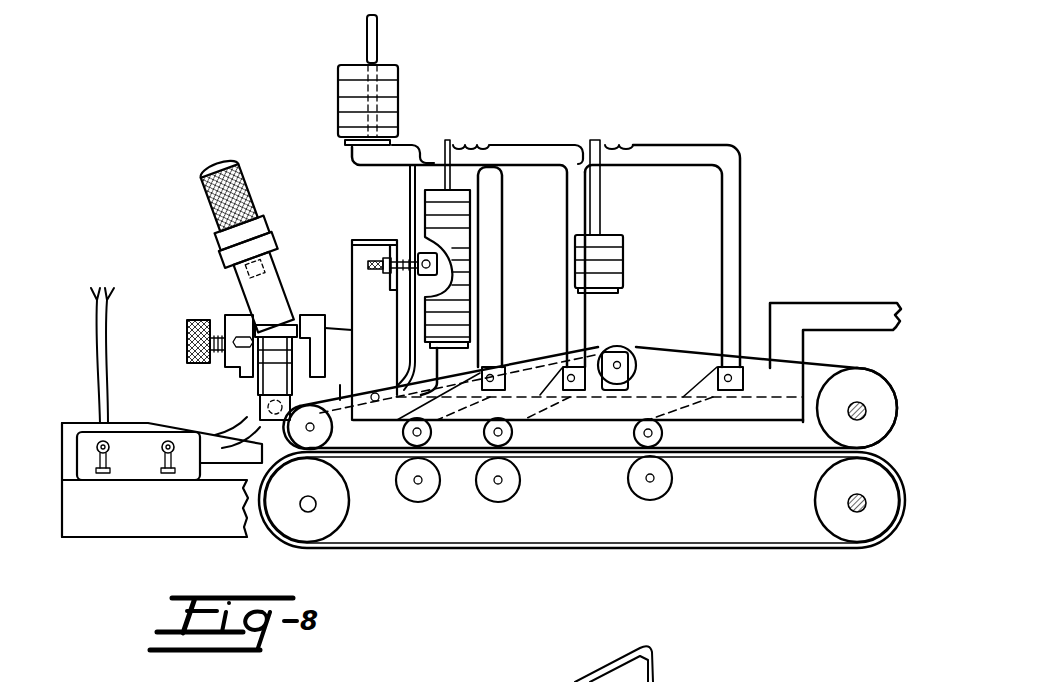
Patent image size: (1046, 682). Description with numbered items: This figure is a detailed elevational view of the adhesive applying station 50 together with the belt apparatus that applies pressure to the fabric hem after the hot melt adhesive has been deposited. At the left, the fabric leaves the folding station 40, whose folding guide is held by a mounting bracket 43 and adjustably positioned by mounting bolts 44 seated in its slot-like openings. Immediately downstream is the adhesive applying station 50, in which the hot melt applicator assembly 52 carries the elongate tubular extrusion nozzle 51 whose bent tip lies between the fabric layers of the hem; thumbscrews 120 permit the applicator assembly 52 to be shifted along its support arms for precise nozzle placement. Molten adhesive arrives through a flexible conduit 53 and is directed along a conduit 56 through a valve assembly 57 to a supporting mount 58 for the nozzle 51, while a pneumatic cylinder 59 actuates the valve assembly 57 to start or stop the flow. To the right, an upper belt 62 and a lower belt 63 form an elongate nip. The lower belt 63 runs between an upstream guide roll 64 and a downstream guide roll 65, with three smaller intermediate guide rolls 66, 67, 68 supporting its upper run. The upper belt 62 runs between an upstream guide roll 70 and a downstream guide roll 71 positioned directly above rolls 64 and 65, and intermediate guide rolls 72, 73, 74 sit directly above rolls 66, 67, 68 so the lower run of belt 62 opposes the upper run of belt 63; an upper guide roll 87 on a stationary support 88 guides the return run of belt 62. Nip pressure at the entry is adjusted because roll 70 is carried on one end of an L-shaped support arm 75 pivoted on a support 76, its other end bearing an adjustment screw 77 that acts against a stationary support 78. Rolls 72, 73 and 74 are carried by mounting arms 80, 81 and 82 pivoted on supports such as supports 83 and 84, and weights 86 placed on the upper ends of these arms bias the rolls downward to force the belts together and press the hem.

The folding station 40 is at (167, 381).
The mounting bracket 43 is at (152, 467).
The mounting bolts 44 is at (170, 466).
The adhesive applying station 50 is at (230, 296).
The extrusion nozzle 51 is at (245, 434).
The hot melt applicator assembly 52 is at (297, 320).
The flexible conduit 53 is at (214, 172).
The conduit 56 is at (267, 272).
The valve assembly 57 is at (277, 389).
The supporting mount 58 is at (247, 417).
The pneumatic cylinder 59 is at (287, 346).
The upper belt 62 is at (697, 347).
The lower belt 63 is at (583, 549).
The upstream guide roll 64 is at (328, 492).
The downstream guide roll 65 is at (872, 490).
The intermediate guide roll 66 is at (418, 500).
The intermediate guide roll 67 is at (498, 500).
The intermediate guide roll 68 is at (650, 498).
The upstream guide roll 70 is at (332, 433).
The downstream guide roll 71 is at (872, 398).
The intermediate guide roll 72 is at (429, 436).
The intermediate guide roll 73 is at (511, 436).
The intermediate guide roll 74 is at (661, 437).
The L-shaped support arm 75 is at (339, 393).
The support 76 is at (374, 393).
The adjustment screw 77 is at (413, 253).
The stationary support 78 is at (370, 240).
The mounting arm 80 is at (493, 250).
The mounting arm 81 is at (583, 312).
The mounting arm 82 is at (742, 256).
The support 83 is at (495, 370).
The support 84 is at (571, 366).
The weights 86 is at (398, 92).
The upper guide roll 87 is at (620, 347).
The stationary support 88 is at (628, 372).
The thumbscrews 120 is at (187, 323).